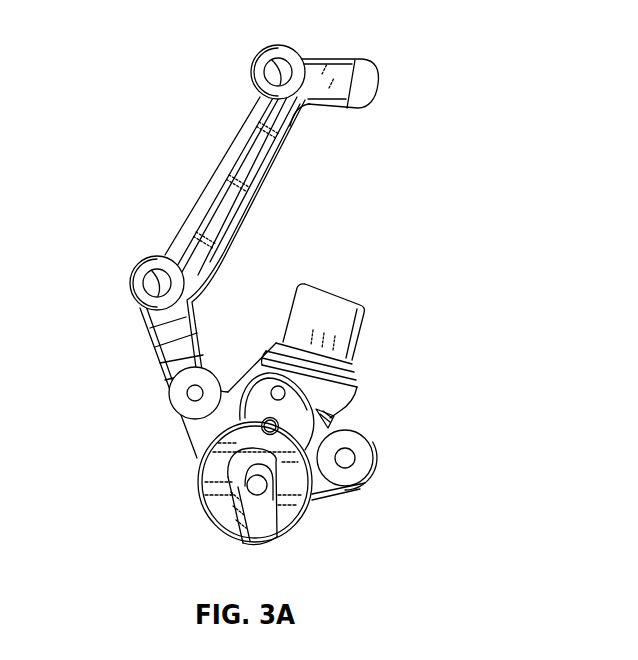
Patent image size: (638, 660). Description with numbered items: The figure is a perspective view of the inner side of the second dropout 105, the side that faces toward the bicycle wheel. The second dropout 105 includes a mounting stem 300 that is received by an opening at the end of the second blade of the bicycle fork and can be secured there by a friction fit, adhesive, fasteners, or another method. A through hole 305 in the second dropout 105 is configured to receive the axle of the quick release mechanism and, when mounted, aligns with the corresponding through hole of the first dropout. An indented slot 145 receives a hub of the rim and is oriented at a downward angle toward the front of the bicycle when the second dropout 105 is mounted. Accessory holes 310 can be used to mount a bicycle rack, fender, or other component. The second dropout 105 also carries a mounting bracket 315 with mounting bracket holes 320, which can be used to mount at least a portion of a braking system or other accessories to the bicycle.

The second dropout 105 is at (337, 395).
The indented slot 145 is at (270, 533).
The mounting stem 300 is at (348, 313).
The through hole 305 is at (260, 490).
The accessory holes 310 is at (198, 391).
The mounting bracket 315 is at (193, 199).
The mounting bracket holes 320 is at (270, 68).